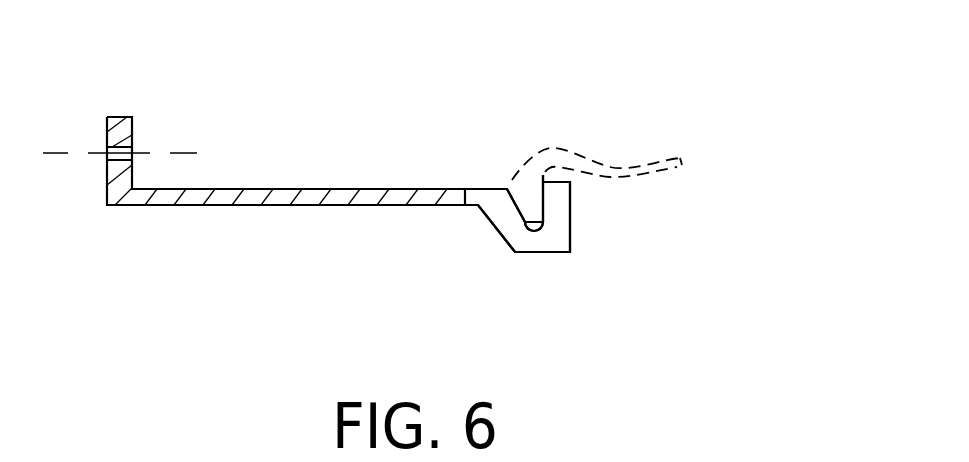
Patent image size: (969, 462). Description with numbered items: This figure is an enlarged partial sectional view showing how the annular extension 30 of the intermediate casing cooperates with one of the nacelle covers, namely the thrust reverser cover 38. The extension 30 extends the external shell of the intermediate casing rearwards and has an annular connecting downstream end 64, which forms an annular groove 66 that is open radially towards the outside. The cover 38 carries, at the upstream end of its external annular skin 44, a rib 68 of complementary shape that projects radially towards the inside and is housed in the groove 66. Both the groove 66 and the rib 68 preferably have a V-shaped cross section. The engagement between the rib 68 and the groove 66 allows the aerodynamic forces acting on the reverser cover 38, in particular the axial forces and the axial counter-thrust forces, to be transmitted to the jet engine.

The annular extension 30 is at (265, 127).
The annular connecting downstream end 64 is at (522, 268).
The annular groove 66 is at (543, 222).
The rib 68 is at (533, 179).
The external annular skin 44 is at (645, 160).
The thrust reverser cover 38 is at (787, 68).